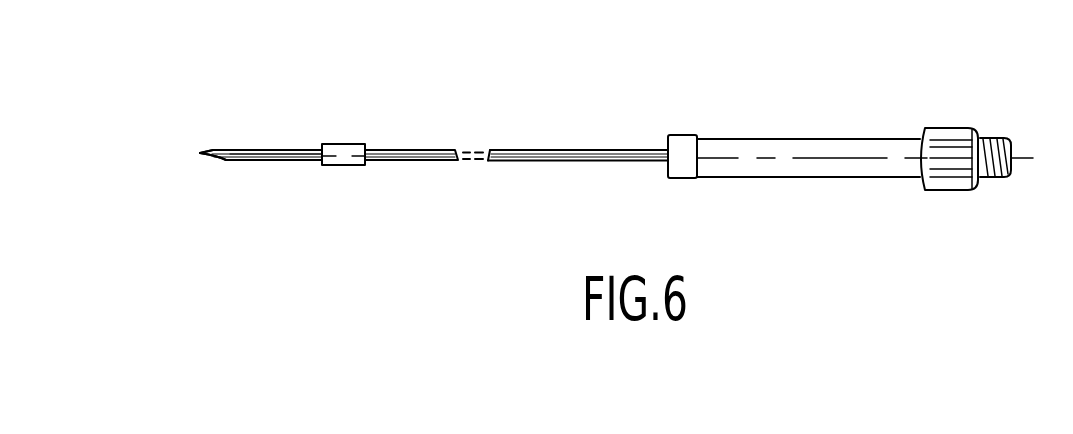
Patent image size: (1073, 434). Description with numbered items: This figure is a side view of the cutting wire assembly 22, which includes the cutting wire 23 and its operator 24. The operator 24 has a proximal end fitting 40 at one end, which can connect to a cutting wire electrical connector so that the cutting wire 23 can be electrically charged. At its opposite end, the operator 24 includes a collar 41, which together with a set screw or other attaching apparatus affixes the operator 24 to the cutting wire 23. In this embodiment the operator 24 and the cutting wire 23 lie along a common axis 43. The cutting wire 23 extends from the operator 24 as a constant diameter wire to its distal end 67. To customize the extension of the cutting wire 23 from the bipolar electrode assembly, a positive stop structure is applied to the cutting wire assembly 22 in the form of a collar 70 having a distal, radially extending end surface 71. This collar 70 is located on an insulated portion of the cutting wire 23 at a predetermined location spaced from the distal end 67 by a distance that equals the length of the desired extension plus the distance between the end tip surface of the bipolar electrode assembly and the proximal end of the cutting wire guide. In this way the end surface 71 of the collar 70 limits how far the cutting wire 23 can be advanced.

The cutting wire assembly 22 is at (585, 132).
The cutting wire 23 is at (589, 163).
The operator 24 is at (823, 140).
The proximal end fitting 40 is at (954, 128).
The collar 41 is at (684, 168).
The axis 43 is at (1033, 160).
The distal end 67 is at (213, 152).
The collar 70 is at (352, 143).
The distal, radially extending end surface 71 is at (320, 158).